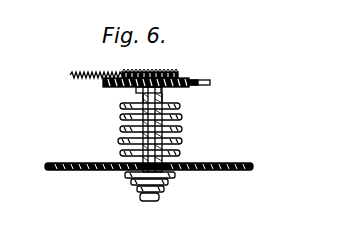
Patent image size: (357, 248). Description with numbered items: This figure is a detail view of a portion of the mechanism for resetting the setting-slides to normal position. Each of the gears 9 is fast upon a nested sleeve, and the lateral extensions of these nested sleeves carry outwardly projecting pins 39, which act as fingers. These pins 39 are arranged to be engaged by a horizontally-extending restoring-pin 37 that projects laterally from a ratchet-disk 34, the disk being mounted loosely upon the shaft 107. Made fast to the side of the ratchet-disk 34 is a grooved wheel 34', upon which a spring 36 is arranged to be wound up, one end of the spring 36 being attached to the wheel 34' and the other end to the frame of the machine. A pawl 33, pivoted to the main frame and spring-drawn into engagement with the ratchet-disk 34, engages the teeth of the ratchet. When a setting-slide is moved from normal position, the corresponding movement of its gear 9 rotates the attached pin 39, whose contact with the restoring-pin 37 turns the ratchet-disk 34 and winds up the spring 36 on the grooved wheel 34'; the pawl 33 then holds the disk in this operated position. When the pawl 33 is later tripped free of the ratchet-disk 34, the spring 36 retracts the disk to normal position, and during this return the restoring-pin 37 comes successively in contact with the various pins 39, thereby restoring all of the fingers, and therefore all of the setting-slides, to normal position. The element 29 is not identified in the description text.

The gear 9 is at (232, 164).
The sleeve rods 29 is at (178, 130).
The pawl 33 is at (208, 82).
The ratchet-disk 34 is at (178, 63).
The grooved wheel 34' is at (167, 62).
The spring 36 is at (96, 86).
The restoring-pin 37 is at (158, 94).
The pin 39 is at (132, 104).
The shaft 107 is at (162, 183).